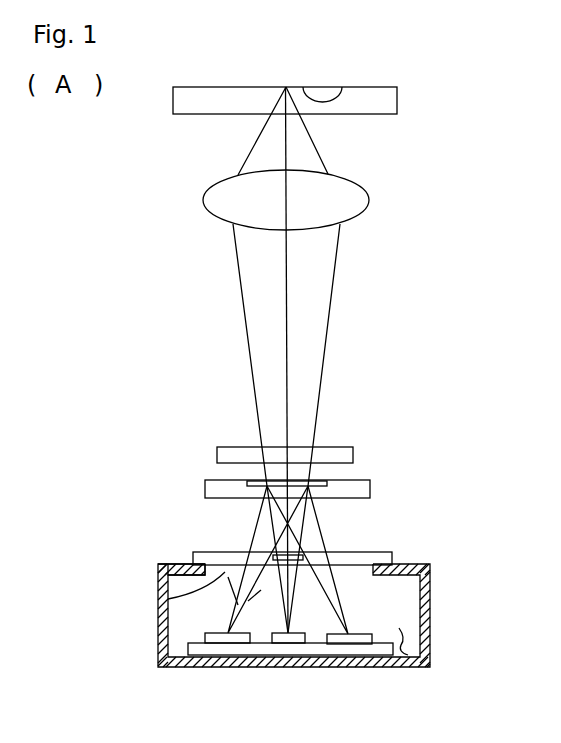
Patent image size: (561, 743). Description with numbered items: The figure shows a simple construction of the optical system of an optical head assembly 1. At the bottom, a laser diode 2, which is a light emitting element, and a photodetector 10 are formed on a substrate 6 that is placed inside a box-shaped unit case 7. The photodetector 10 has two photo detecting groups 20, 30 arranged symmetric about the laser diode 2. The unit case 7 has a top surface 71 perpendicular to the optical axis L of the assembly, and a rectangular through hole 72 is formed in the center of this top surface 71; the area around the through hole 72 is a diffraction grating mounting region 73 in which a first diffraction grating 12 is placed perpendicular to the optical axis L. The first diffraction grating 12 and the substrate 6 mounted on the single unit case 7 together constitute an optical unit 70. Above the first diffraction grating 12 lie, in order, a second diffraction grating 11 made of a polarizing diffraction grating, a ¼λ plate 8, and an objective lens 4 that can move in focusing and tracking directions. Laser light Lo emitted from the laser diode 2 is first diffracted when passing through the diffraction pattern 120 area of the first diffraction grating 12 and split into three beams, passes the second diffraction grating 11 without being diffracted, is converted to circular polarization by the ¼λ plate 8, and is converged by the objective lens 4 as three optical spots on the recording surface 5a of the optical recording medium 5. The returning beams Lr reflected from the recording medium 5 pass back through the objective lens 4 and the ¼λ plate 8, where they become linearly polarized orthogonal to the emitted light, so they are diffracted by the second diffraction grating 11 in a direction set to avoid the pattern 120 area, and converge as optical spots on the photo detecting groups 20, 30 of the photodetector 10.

The optical head assembly 1 is at (461, 144).
The laser diode 2 is at (298, 638).
The objective lens 4 is at (202, 200).
The optical recording medium 5 is at (171, 97).
The recording surface 5a is at (342, 88).
The substrate 6 is at (408, 655).
The unit case 7 is at (424, 636).
The ¼λ plate 8 is at (217, 460).
The photodetector 10 is at (354, 681).
The second diffraction grating 11 is at (364, 488).
The first diffraction grating 12 is at (377, 557).
The photo detecting group 20 is at (363, 640).
The photo detecting group 30 is at (213, 638).
The optical unit 70 is at (488, 552).
The top surface 71 is at (185, 572).
The through hole 72 is at (172, 598).
The diffraction grating mounting region 73 is at (189, 541).
The diffraction pattern area 120 is at (319, 564).
The optical axis L is at (283, 296).
The laser light Lo is at (297, 577).
The returning beams Lr is at (238, 589).